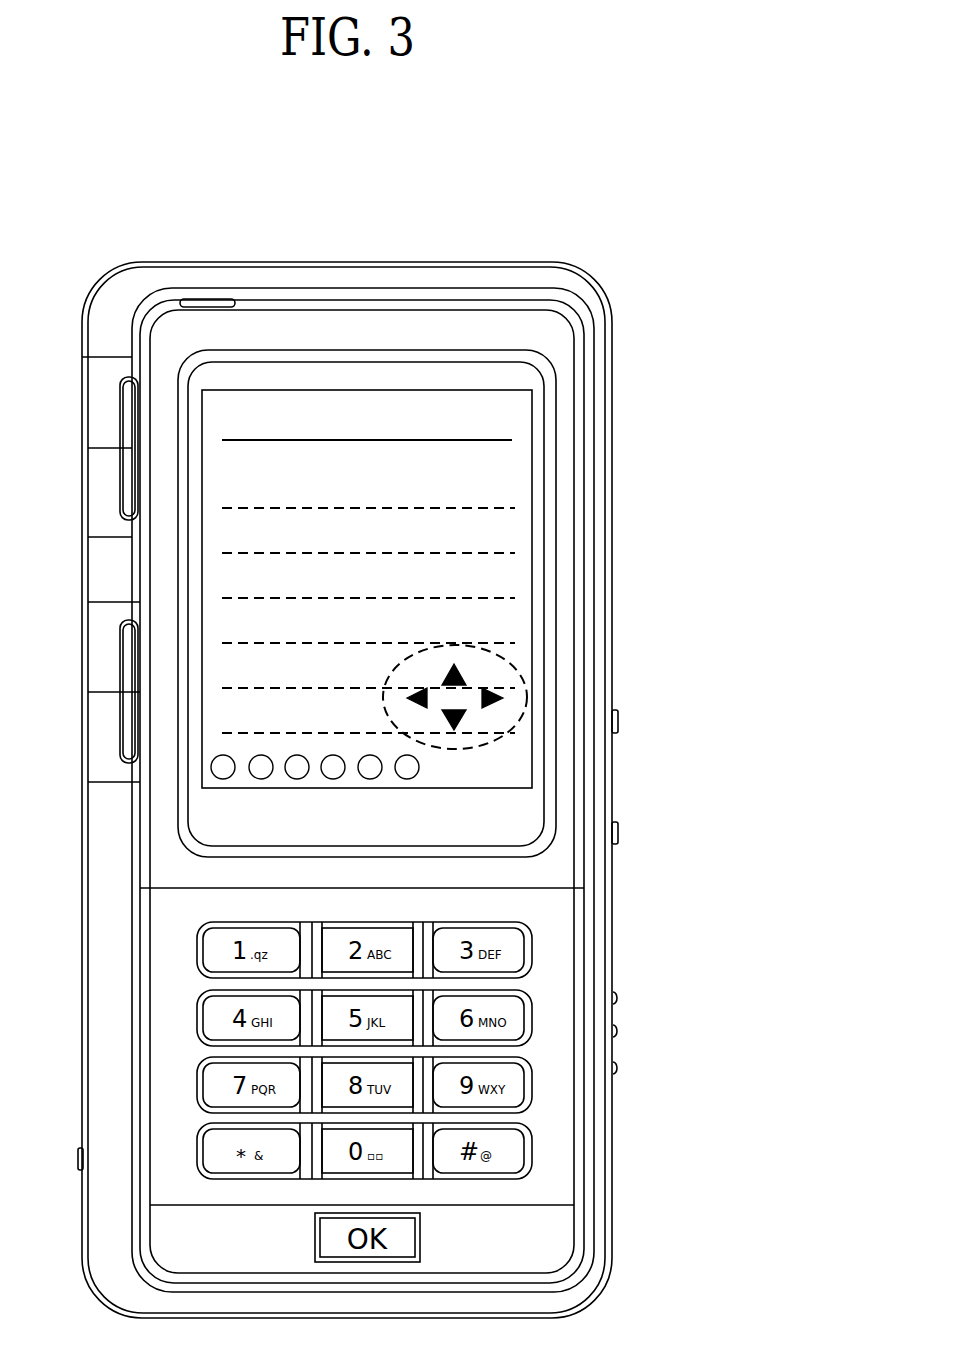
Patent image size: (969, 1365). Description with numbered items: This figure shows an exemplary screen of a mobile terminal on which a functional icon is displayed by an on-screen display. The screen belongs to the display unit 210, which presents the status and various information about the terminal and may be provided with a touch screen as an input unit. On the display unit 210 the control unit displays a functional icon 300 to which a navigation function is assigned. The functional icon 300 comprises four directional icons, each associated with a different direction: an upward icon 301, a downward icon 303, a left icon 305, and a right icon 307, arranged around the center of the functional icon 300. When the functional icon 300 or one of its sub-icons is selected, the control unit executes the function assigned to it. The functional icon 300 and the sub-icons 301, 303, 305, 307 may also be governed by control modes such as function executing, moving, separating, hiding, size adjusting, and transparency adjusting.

The display unit 210 is at (533, 436).
The functional icon 300 is at (523, 721).
The upward icon 301 is at (459, 670).
The downward icon 303 is at (457, 727).
The left icon 305 is at (383, 690).
The right icon 307 is at (494, 703).